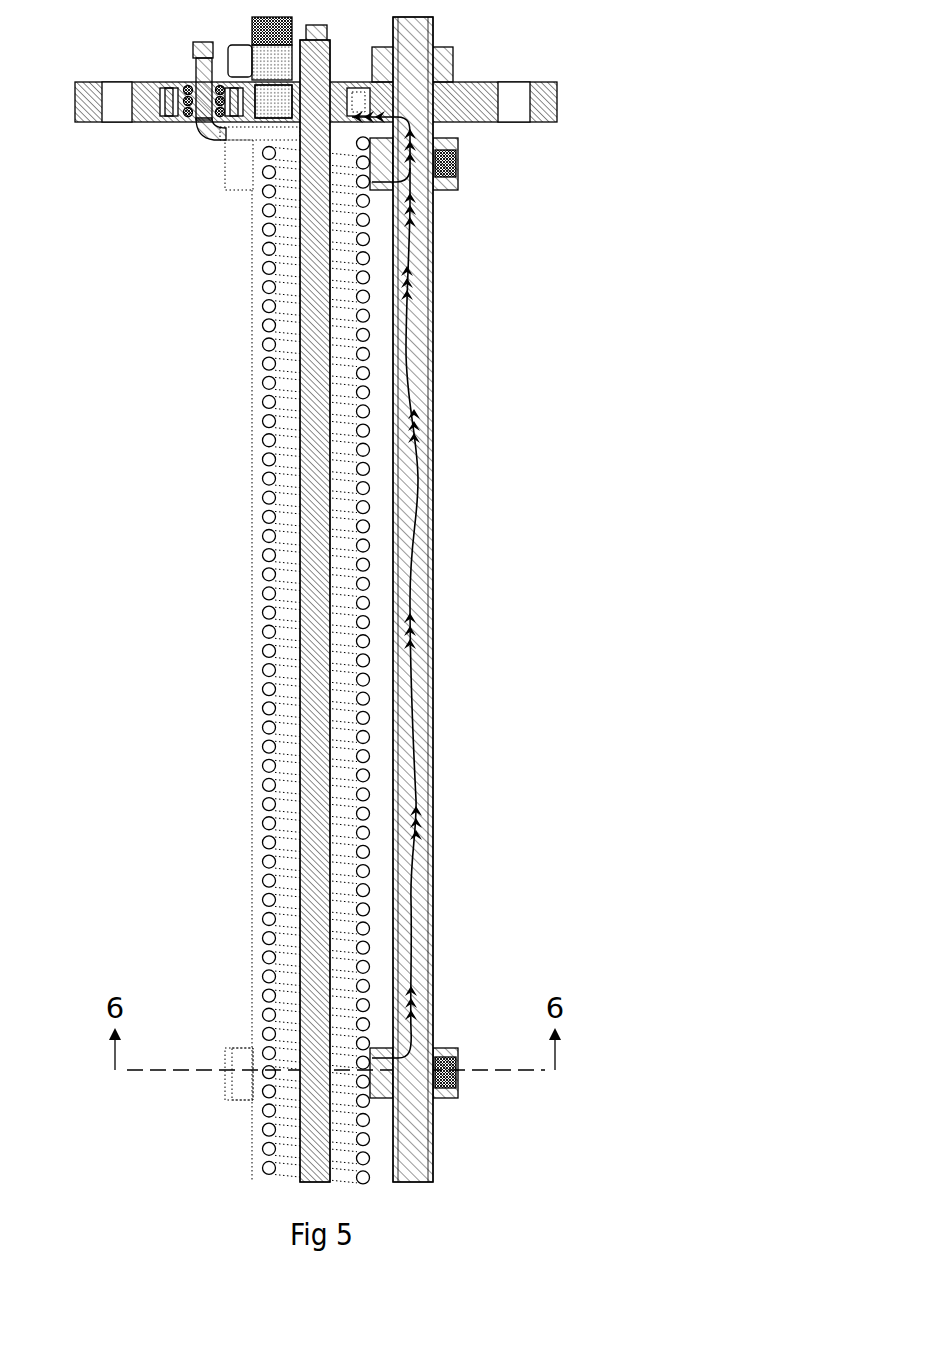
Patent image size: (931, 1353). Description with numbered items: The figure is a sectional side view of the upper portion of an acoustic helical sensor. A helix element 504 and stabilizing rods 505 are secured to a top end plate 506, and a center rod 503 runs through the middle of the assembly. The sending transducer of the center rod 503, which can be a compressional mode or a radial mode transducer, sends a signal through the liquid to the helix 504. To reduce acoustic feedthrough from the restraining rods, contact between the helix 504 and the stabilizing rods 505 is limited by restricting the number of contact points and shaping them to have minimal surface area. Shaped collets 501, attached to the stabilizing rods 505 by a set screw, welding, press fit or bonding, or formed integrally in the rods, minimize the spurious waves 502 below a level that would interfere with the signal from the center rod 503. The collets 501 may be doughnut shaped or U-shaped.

The shaped collet 501 is at (455, 190).
The spurious waves 502 is at (417, 131).
The center rod 503 is at (317, 417).
The helix element 504 is at (267, 552).
The stabilizing rod 505 is at (433, 657).
The top end plate 506 is at (482, 93).